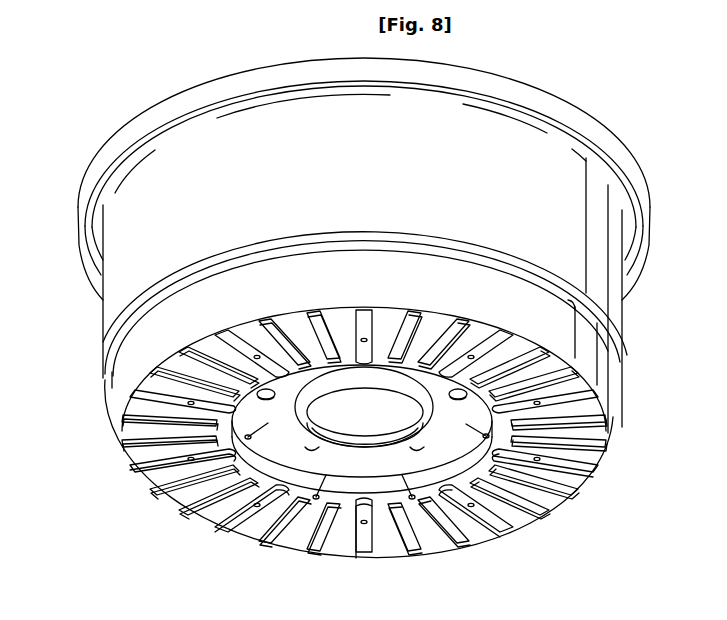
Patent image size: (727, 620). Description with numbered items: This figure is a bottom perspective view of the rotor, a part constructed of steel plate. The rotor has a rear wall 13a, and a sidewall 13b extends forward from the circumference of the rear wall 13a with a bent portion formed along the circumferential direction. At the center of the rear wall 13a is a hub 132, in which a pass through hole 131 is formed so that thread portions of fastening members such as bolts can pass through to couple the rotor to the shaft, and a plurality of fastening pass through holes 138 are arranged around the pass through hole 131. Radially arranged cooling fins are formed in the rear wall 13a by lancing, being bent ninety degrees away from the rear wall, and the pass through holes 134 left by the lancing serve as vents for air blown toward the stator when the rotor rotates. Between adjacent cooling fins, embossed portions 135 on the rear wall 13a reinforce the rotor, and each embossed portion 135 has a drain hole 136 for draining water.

The rear wall 13a is at (134, 434).
The sidewall 13b is at (103, 298).
The pass through hole 131 is at (365, 420).
The hub 132 is at (187, 503).
The pass through hole 134 is at (547, 362).
The embossed portion 135 is at (539, 462).
The drain hole 136 is at (362, 530).
The fastening pass through hole 138 is at (137, 440).